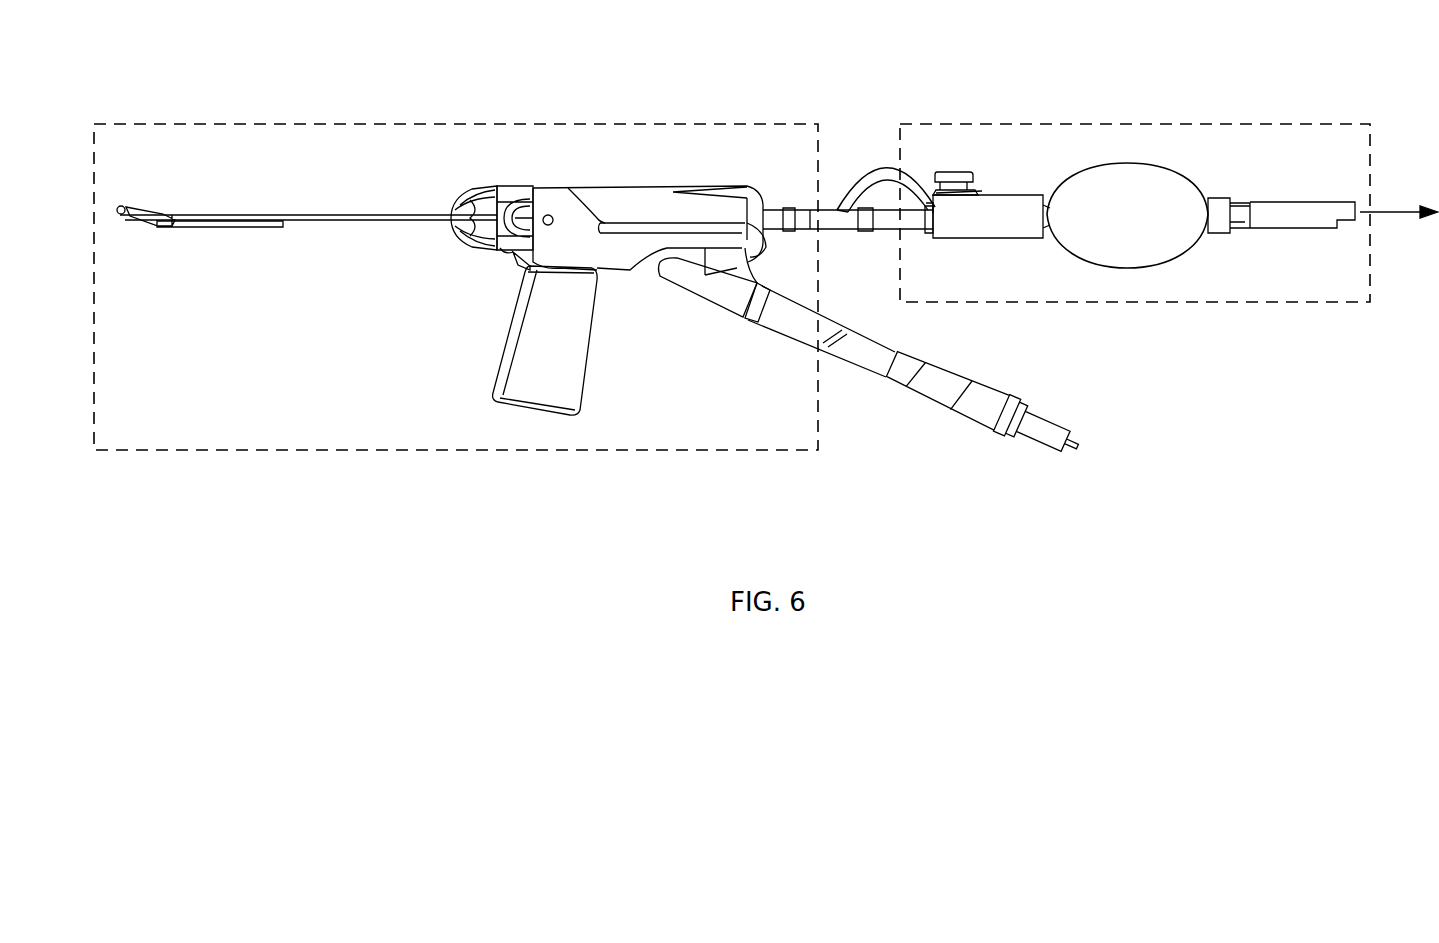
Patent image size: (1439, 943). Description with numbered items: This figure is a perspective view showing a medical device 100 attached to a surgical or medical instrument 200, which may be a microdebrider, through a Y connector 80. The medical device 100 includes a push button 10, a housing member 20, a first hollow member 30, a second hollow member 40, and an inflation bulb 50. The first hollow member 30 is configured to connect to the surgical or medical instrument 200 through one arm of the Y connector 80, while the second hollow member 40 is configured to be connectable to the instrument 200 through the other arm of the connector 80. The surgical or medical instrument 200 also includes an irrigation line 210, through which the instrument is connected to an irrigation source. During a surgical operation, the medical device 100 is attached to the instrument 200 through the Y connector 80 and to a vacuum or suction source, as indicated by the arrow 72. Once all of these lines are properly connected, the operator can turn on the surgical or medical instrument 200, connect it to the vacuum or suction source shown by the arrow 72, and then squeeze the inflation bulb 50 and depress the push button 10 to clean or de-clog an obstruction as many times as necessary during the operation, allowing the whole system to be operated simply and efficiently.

The surgical or medical instrument 200 is at (233, 124).
The medical device 100 is at (1272, 124).
The push button 10 is at (957, 172).
The housing member 20 is at (1005, 238).
The first hollow member 30 is at (905, 215).
The second hollow member 40 is at (885, 217).
The inflation bulb 50 is at (1144, 175).
The arrow 72 is at (1380, 212).
The Y connector 80 is at (832, 230).
The irrigation line 210 is at (1088, 473).